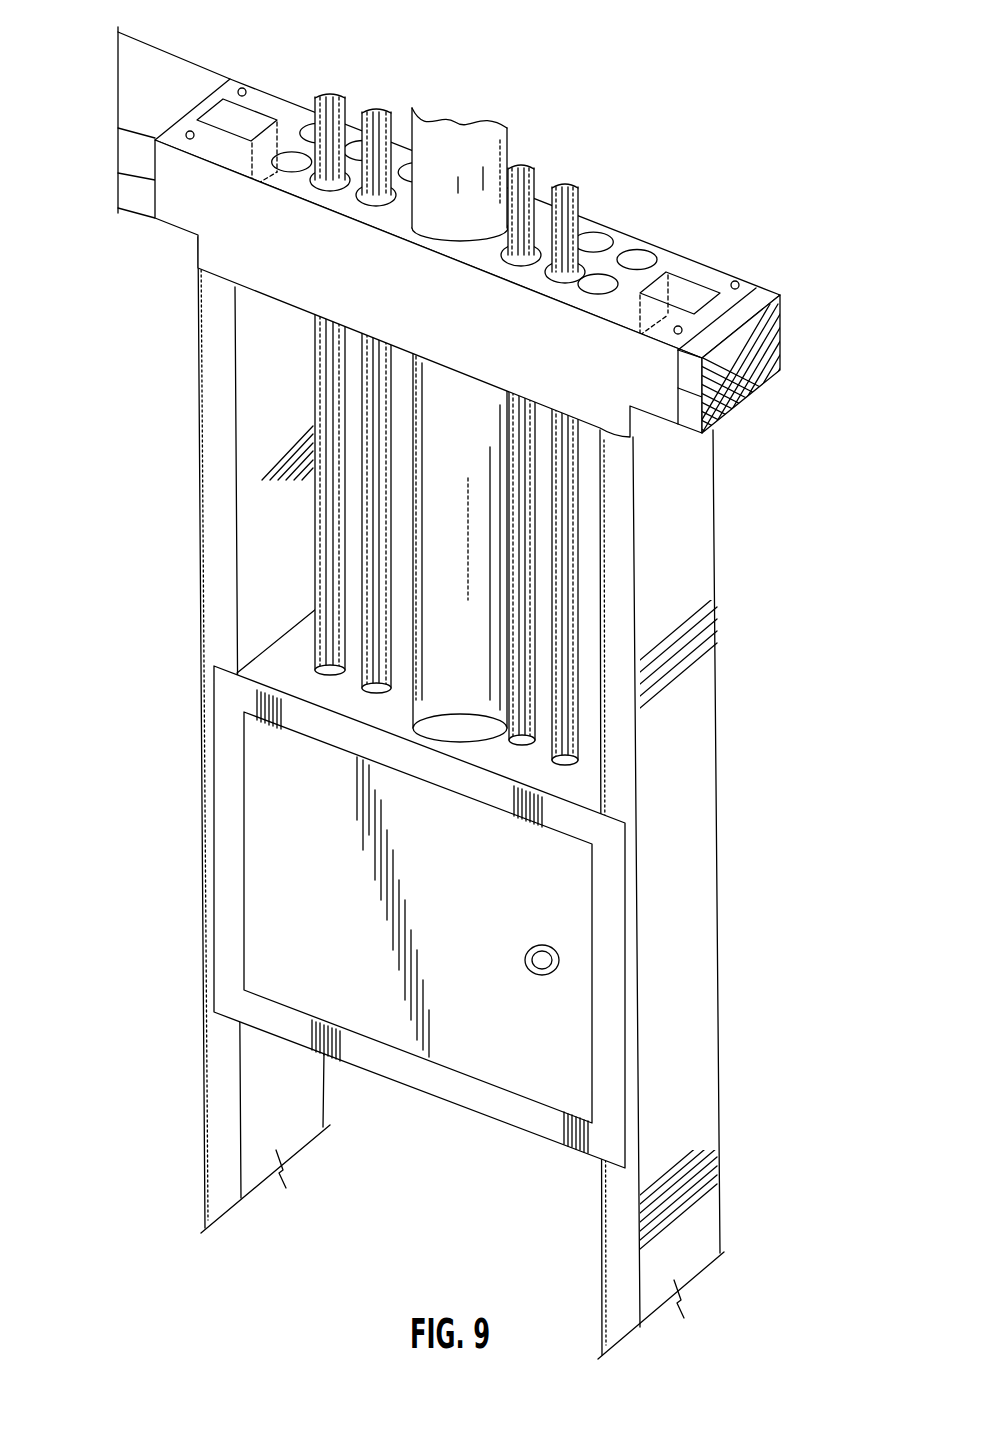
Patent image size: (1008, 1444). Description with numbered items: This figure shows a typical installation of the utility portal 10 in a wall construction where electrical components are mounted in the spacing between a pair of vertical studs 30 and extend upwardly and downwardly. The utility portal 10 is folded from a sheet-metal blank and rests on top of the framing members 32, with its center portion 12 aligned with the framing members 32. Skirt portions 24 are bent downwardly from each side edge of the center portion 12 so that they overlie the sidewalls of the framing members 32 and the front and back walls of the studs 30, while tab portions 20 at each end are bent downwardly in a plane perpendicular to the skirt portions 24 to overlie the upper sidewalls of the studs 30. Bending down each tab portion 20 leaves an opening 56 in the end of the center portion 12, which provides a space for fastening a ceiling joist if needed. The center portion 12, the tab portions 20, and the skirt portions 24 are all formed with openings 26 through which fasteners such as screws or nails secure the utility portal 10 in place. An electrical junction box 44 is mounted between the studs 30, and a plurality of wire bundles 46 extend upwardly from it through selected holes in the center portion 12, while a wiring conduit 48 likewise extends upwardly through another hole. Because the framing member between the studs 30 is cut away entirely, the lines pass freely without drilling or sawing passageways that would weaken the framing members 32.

The utility portal 10 is at (459, 386).
The center portion 12 is at (428, 386).
The tab portions 20 is at (282, 147).
The skirt portions 24 is at (237, 250).
The openings 26 is at (188, 133).
The studs 30 is at (203, 752).
The top framing members 32 is at (782, 333).
The electrical junction box 44 is at (573, 914).
The wire bundles 46 is at (316, 607).
The wiring conduit 48 is at (500, 571).
The opening 56 is at (250, 118).